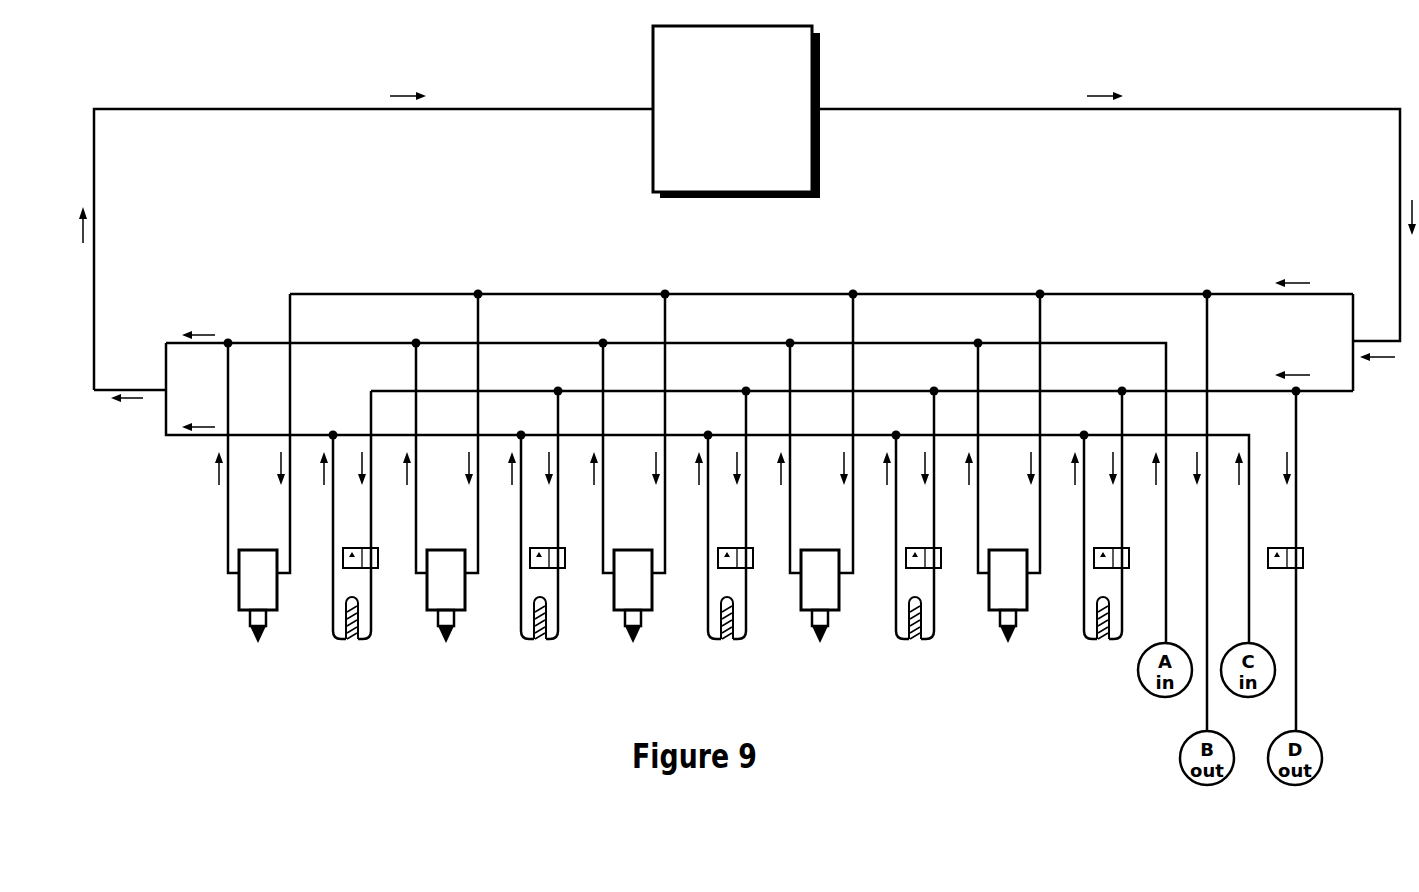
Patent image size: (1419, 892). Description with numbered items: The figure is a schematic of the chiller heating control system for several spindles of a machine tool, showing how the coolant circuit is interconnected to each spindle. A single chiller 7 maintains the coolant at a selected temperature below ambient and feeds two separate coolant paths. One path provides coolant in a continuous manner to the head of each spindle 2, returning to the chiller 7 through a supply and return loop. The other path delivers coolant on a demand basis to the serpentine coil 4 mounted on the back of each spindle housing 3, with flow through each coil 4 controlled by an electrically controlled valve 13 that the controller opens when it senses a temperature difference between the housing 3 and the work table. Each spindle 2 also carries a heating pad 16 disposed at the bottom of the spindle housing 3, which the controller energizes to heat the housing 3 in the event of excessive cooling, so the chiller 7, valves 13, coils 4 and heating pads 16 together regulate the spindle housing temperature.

The spindle 2 is at (262, 637).
The spindle housing 3 is at (239, 585).
The serpentine coil 4 is at (333, 600).
The chiller 7 is at (821, 57).
The electrically controlled valve 13 is at (372, 548).
The heating pad 16 is at (353, 641).